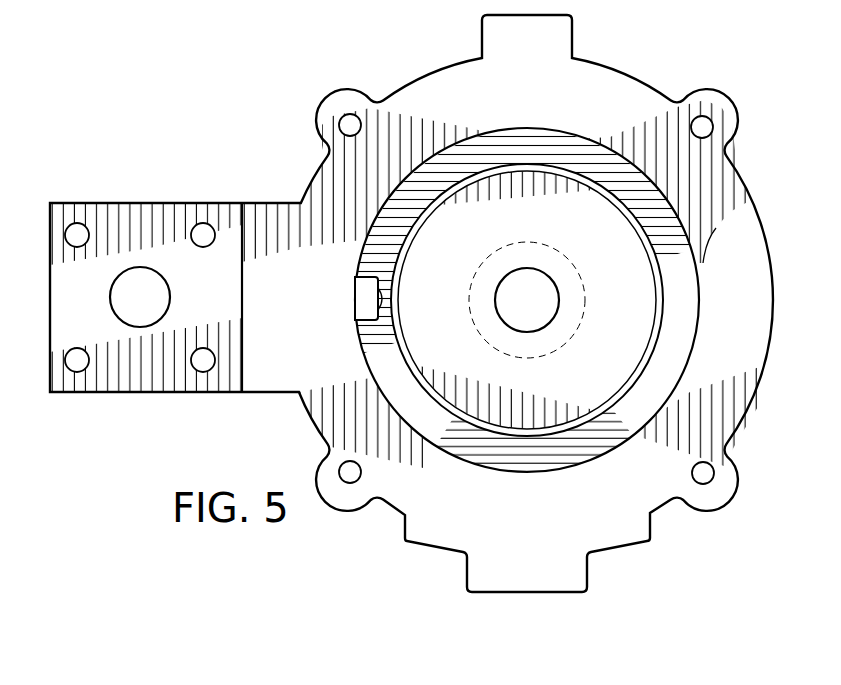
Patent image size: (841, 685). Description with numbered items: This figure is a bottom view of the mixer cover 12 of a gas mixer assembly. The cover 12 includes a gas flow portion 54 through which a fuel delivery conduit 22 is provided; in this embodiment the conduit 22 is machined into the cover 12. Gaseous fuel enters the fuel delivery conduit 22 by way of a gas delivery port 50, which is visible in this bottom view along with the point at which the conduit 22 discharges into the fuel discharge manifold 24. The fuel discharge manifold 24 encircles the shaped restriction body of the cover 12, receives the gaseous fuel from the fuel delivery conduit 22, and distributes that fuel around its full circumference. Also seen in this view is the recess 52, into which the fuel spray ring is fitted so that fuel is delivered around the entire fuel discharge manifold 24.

The cover 12 is at (760, 388).
The fuel delivery conduit 22 is at (363, 293).
The fuel discharge manifold 24 is at (678, 215).
The gas delivery port 50 is at (128, 283).
The recess 52 is at (716, 228).
The gas flow portion 54 is at (163, 393).